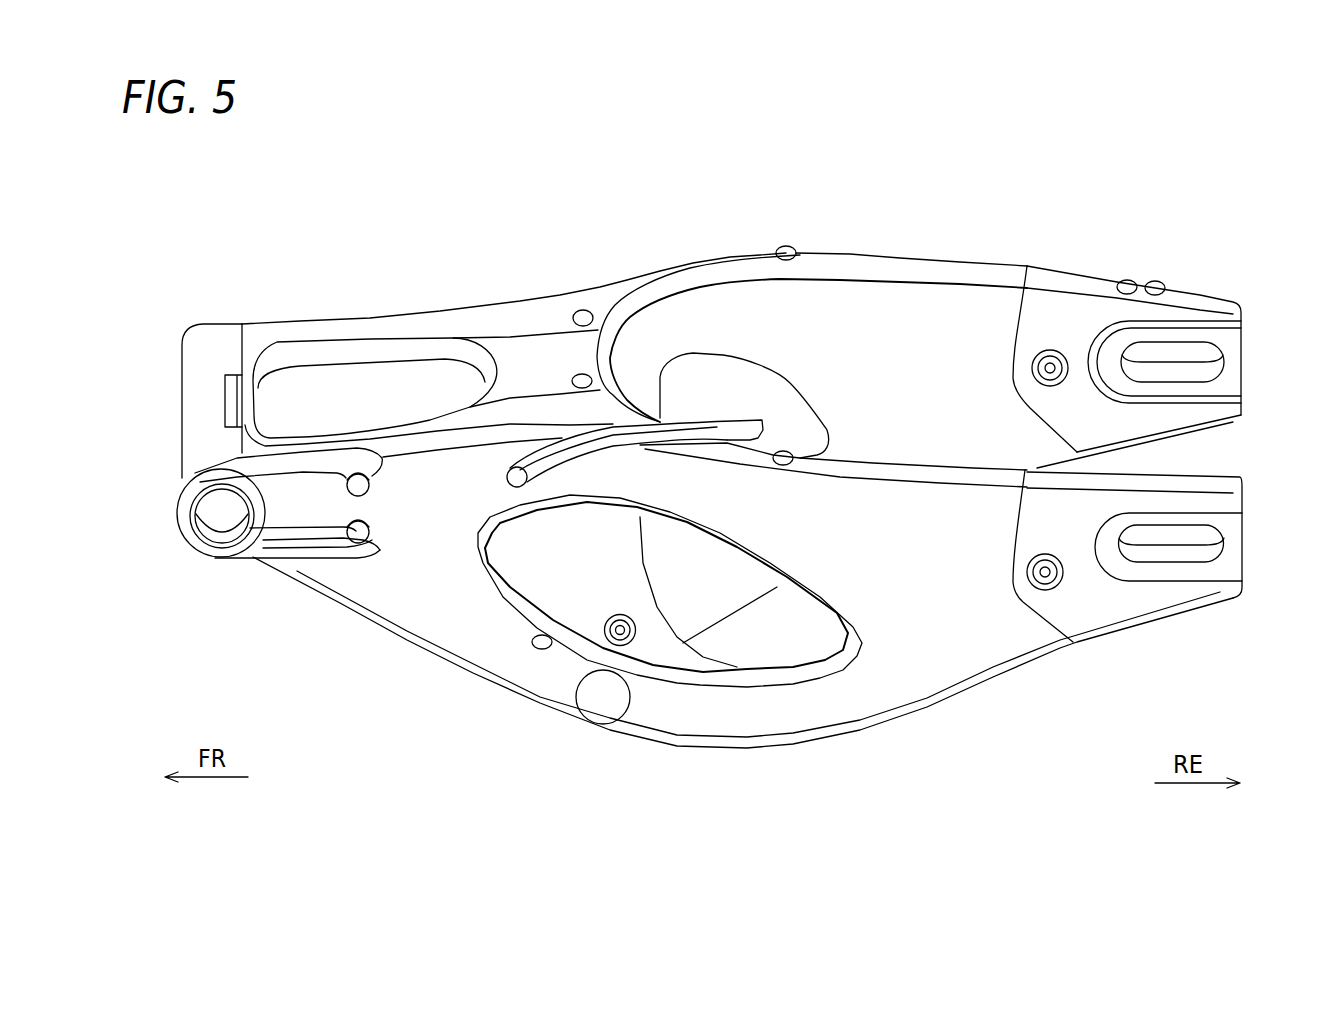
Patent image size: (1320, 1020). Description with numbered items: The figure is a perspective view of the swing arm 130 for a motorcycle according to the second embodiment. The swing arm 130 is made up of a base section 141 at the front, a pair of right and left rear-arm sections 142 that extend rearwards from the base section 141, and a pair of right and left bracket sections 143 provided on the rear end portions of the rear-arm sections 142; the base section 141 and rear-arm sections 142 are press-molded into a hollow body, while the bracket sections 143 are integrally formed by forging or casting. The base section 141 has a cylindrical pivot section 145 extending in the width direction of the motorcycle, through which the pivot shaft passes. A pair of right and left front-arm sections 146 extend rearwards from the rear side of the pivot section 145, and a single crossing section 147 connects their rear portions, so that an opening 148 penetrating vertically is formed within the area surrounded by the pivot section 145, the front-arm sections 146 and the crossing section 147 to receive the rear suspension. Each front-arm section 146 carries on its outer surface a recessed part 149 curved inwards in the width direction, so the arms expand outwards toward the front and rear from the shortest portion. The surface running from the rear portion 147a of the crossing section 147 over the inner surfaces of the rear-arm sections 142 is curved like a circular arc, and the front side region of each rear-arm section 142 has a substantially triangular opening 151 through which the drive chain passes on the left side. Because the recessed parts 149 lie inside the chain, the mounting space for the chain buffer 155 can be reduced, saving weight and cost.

The swing arm 130 is at (673, 213).
The base section 141 is at (357, 316).
The rear-arm sections 142 is at (977, 257).
The bracket sections 143 is at (1211, 289).
The pivot section 145 is at (205, 385).
The front-arm sections 146 is at (403, 323).
The crossing section 147 is at (538, 316).
The rear portion of the crossing section 147a is at (616, 295).
The opening 148 is at (315, 380).
The recessed part 149 is at (423, 467).
The opening 151 is at (788, 432).
The chain buffer 155 is at (694, 420).